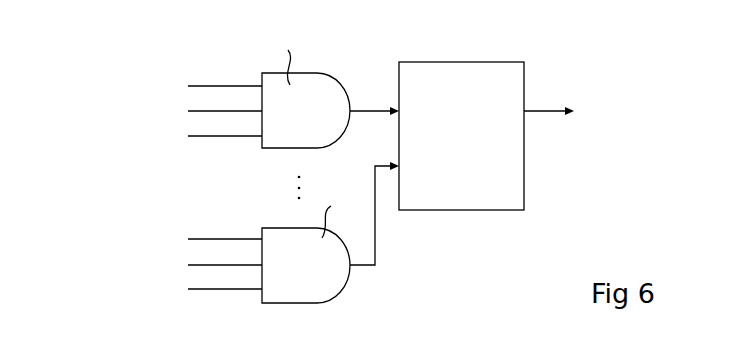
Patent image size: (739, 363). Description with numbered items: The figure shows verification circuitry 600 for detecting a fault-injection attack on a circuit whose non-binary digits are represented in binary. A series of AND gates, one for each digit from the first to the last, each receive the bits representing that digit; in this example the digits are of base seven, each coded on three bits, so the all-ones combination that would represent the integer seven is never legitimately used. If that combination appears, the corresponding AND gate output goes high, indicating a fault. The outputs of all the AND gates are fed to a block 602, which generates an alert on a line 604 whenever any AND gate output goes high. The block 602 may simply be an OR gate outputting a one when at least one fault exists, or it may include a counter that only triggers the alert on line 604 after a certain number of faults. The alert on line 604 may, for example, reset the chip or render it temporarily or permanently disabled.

The verification circuitry 600 is at (404, 163).
The block 602 is at (478, 202).
The line 604 is at (546, 113).